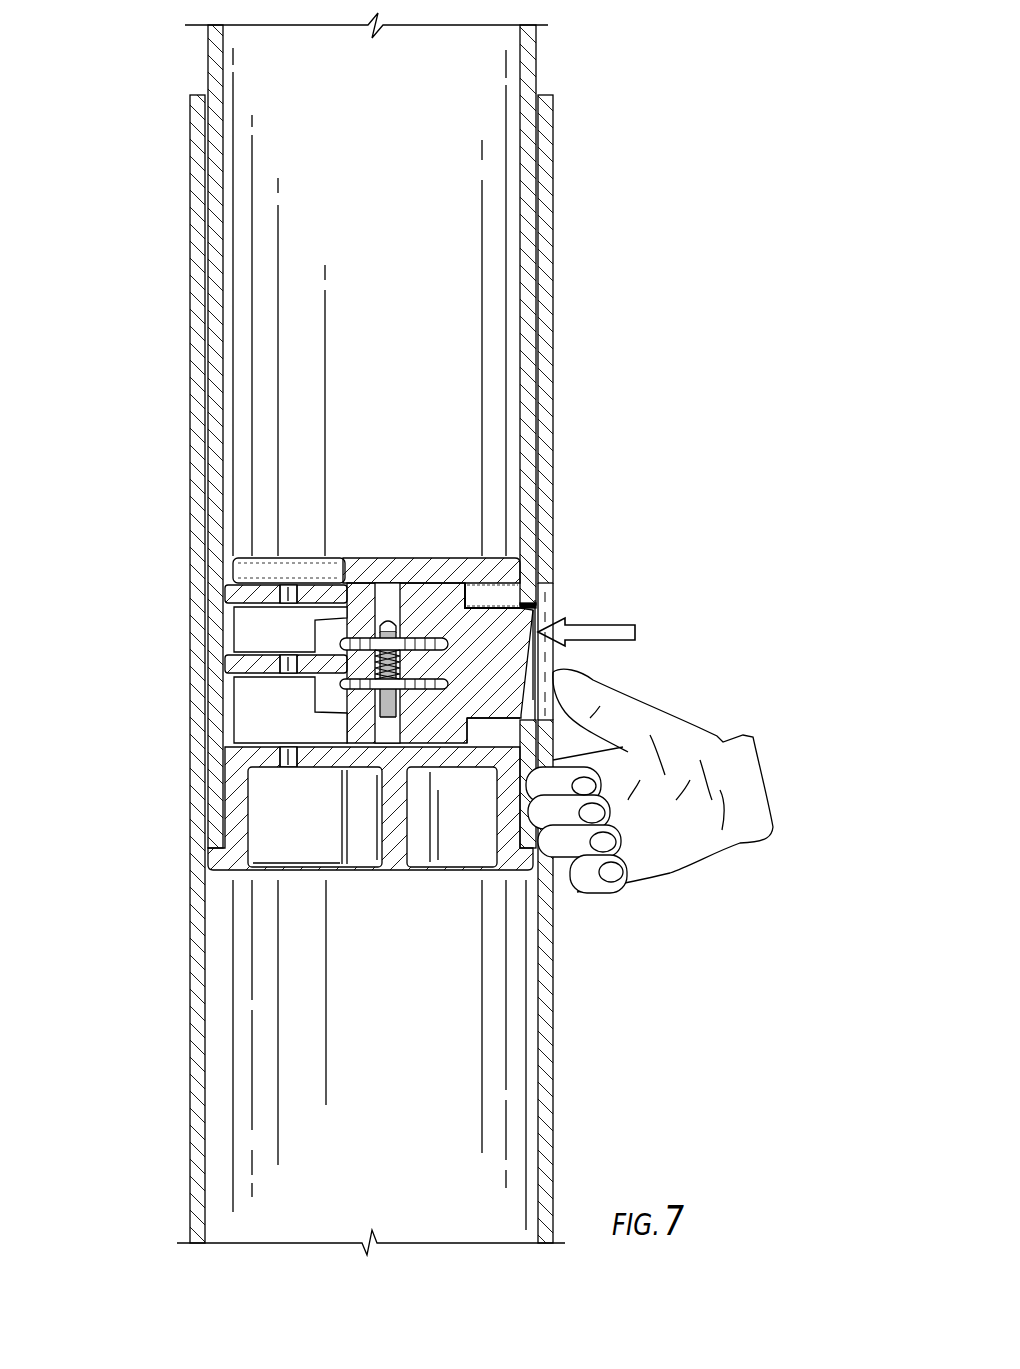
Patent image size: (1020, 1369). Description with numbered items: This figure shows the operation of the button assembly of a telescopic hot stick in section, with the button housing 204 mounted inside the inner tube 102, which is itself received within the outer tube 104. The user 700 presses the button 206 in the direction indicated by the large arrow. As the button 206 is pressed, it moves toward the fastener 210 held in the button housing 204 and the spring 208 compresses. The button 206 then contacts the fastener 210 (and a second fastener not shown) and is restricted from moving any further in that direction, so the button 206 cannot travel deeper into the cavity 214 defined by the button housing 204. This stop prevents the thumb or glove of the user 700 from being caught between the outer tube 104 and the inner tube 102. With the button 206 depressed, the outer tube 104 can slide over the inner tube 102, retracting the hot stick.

The inner tube 102 is at (223, 233).
The outer tube 104 is at (190, 416).
The button housing 204 is at (233, 638).
The button 206 is at (577, 606).
The spring 208 is at (340, 683).
The fastener 210 is at (388, 622).
The cavity 214 is at (498, 602).
The user 700 is at (691, 902).